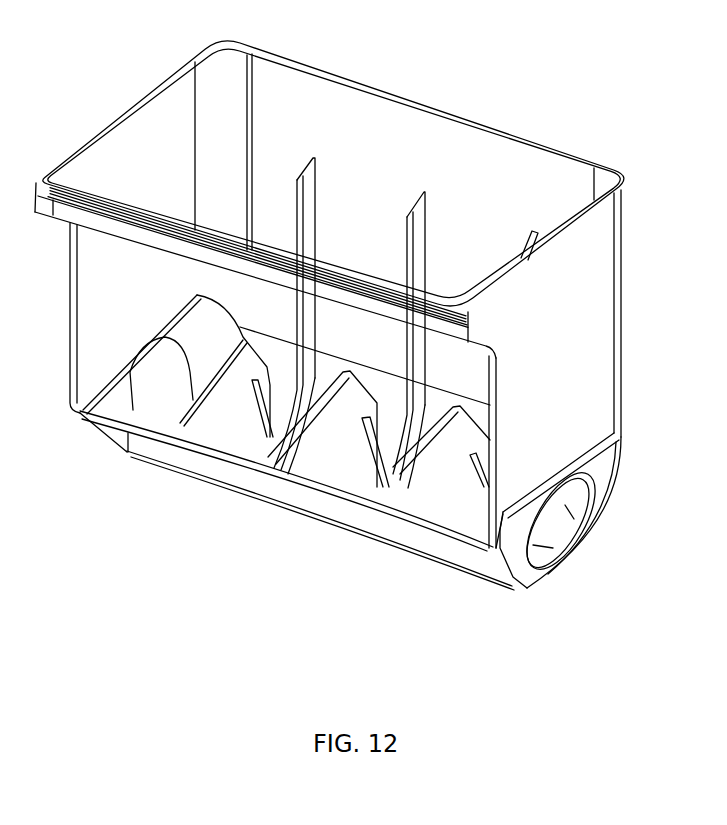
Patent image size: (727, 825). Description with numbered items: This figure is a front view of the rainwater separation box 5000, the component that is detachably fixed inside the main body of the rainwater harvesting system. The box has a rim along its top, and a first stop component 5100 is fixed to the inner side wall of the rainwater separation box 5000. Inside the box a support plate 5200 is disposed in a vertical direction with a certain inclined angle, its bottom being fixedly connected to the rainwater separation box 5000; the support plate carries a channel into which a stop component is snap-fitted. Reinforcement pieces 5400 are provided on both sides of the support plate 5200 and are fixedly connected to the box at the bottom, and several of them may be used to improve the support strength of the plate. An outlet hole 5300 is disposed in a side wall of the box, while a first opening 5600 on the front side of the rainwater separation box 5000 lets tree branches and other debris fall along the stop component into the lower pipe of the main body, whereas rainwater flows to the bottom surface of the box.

The rainwater separation box 5000 is at (557, 280).
The first stop component 5100 is at (127, 203).
The support plate 5200 is at (207, 405).
The outlet hole 5300 is at (581, 545).
The reinforcement piece 5400 is at (262, 412).
The first opening 5600 is at (477, 420).